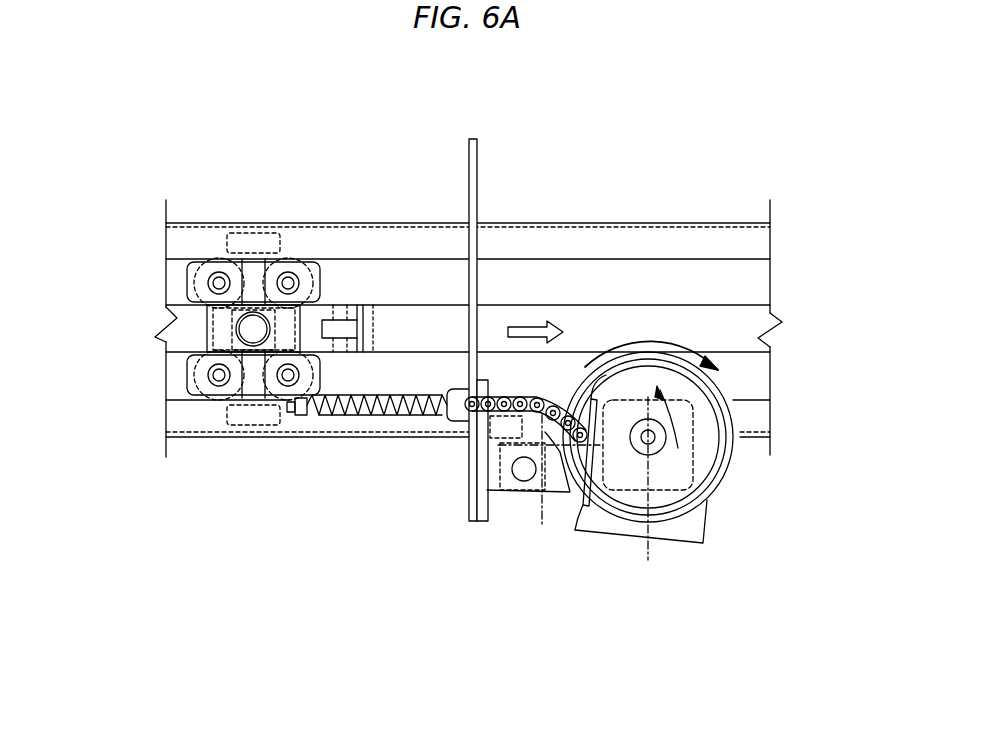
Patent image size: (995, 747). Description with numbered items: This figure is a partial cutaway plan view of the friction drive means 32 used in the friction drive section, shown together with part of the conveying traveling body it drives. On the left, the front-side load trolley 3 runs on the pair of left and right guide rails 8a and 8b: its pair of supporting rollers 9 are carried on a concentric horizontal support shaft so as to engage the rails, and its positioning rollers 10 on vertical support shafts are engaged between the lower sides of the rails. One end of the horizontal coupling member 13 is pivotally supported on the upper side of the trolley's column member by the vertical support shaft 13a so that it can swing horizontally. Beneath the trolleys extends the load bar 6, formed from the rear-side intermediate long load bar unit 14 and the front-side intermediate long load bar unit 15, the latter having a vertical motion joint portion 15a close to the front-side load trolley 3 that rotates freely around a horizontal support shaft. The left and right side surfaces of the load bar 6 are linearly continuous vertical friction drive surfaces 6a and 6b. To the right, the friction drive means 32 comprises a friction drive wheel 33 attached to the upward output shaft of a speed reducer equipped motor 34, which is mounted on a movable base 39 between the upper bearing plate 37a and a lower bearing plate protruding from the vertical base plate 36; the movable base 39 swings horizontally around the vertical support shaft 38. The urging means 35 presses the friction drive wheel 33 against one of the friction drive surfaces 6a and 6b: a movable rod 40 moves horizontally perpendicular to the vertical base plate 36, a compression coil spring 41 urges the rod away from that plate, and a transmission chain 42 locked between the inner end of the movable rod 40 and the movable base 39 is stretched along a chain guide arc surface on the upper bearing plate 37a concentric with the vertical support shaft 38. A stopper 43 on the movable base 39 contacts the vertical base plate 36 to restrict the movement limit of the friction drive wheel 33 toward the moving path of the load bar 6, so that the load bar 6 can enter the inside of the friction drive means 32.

The front-side load trolley 3 is at (187, 284).
The load bar 6 is at (706, 298).
The friction drive surface 6a is at (737, 350).
The friction drive surface 6b is at (737, 307).
The guide rail 8a is at (197, 420).
The guide rail 8b is at (570, 243).
The supporting roller 9 is at (253, 232).
The positioning roller 10 is at (214, 261).
The horizontal coupling member 13 is at (168, 316).
The vertical support shaft 13a is at (258, 329).
The rear-side intermediate long load bar unit 14 is at (170, 336).
The front-side intermediate long load bar unit 15 is at (643, 318).
The vertical motion joint portion 15a is at (343, 306).
The friction drive means 32 is at (712, 514).
The friction drive wheel 33 is at (723, 460).
The speed reducer equipped motor 34 is at (634, 484).
The urging means 35 is at (311, 417).
The vertical base plate 36 is at (482, 481).
The upper bearing plate 37a is at (553, 470).
The vertical support shaft 38 is at (524, 472).
The movable base 39 is at (500, 465).
The movable rod 40 is at (371, 412).
The compression coil spring 41 is at (418, 420).
The transmission chain 42 is at (537, 381).
The stopper 43 is at (495, 412).